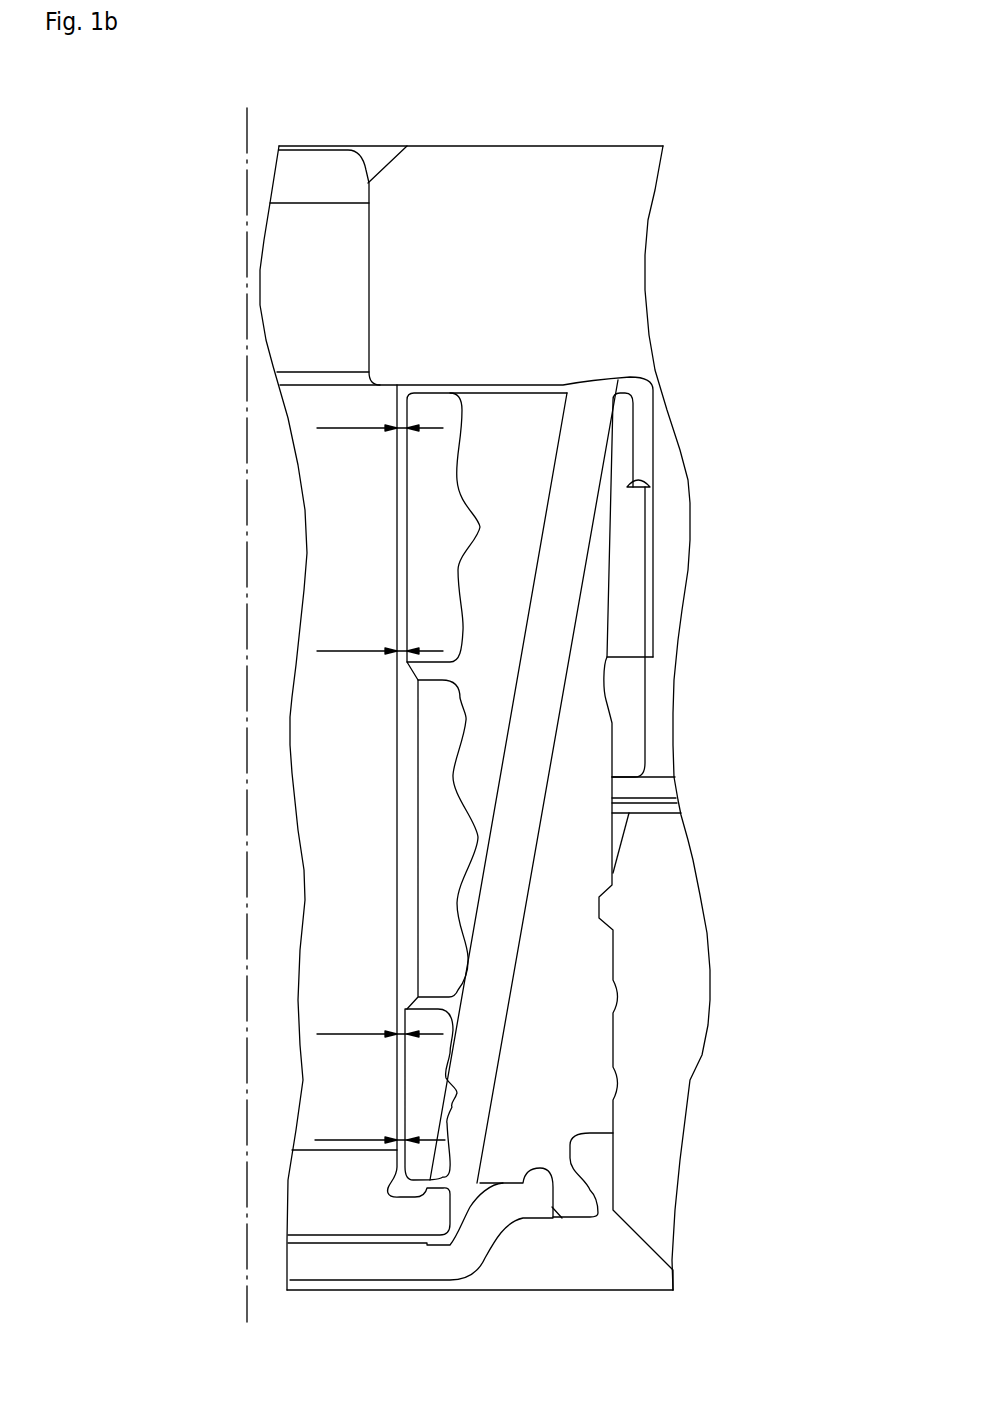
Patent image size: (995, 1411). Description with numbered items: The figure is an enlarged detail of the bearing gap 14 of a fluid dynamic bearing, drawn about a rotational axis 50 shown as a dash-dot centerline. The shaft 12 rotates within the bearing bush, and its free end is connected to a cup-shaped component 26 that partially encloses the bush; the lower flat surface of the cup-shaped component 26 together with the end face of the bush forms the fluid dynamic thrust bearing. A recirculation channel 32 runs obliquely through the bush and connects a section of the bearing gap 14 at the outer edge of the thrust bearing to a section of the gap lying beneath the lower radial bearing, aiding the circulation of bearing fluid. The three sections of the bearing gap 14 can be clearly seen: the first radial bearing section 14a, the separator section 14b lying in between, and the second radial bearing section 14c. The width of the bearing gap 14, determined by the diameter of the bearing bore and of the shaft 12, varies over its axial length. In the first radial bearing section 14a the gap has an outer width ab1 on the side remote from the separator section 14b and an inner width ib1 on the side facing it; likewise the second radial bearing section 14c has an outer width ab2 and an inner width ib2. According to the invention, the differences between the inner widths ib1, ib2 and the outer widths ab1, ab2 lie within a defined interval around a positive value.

The axis of rotation 50 is at (245, 152).
The shaft 12 is at (318, 183).
The cup-shaped component 26 is at (470, 230).
The recirculation channel 32 is at (580, 427).
The bearing gap 14 is at (407, 877).
The first radial bearing section 14a is at (487, 536).
The separator section 14b is at (468, 844).
The second radial bearing section 14c is at (454, 1094).
The outer width ab1 is at (380, 411).
The inner width ib1 is at (380, 634).
The inner width ib2 is at (380, 1018).
The outer width ab2 is at (380, 1125).